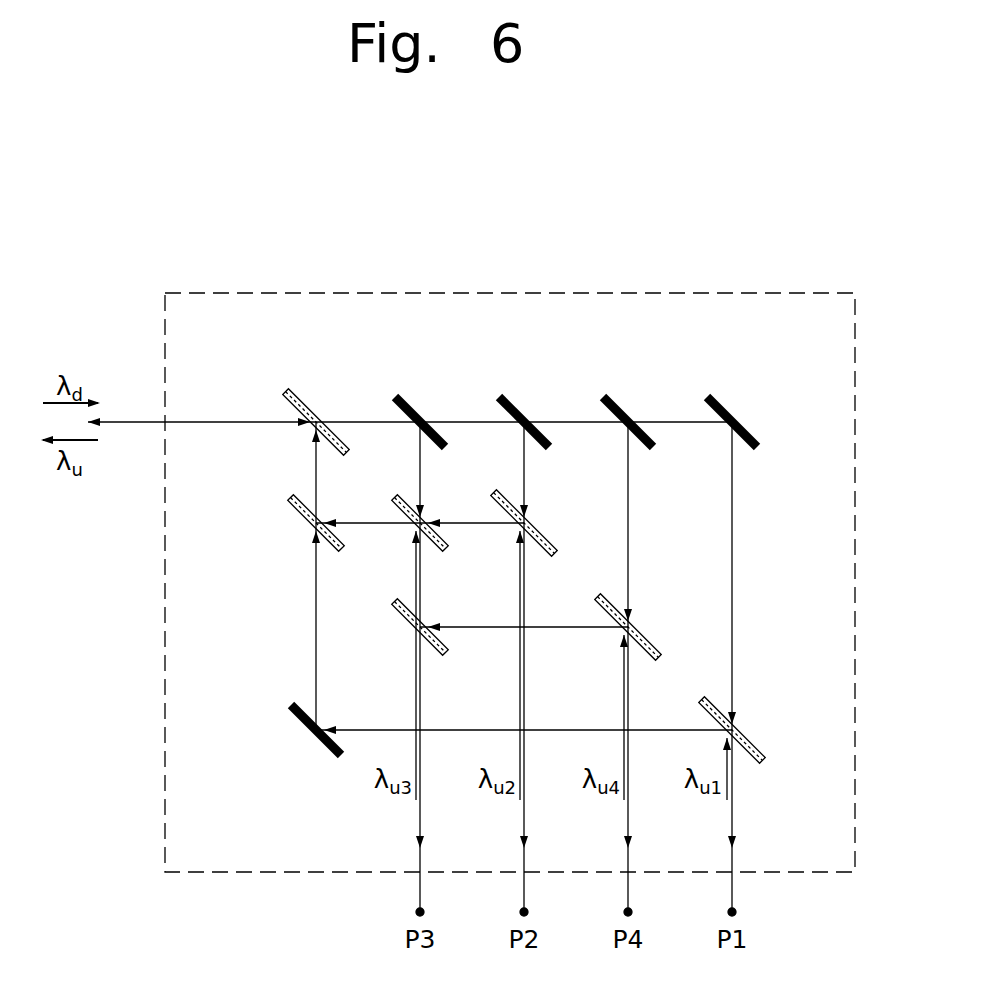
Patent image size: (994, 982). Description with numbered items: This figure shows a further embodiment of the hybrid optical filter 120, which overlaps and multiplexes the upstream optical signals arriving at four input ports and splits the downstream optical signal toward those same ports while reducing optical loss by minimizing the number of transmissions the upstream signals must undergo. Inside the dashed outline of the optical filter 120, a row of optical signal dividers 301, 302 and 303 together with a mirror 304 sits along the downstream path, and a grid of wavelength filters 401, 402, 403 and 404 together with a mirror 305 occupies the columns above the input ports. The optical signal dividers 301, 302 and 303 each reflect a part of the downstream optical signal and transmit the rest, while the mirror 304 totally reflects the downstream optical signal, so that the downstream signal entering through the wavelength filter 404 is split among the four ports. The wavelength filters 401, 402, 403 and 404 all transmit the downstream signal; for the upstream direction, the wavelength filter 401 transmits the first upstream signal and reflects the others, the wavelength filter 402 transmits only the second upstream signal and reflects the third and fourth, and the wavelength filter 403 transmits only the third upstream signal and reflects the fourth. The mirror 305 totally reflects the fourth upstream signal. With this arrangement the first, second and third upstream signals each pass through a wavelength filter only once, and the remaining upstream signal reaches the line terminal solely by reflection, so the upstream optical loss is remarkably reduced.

The optical filter 120 is at (745, 223).
The optical signal divider 301 is at (416, 400).
The optical signal divider 302 is at (520, 400).
The optical signal divider 303 is at (624, 400).
The mirror 304 is at (726, 400).
The mirror 305 is at (303, 732).
The wavelength filter 401 is at (307, 528).
The wavelength filter 402 is at (412, 530).
The wavelength filter 403 is at (403, 618).
The wavelength filter 404 is at (312, 400).